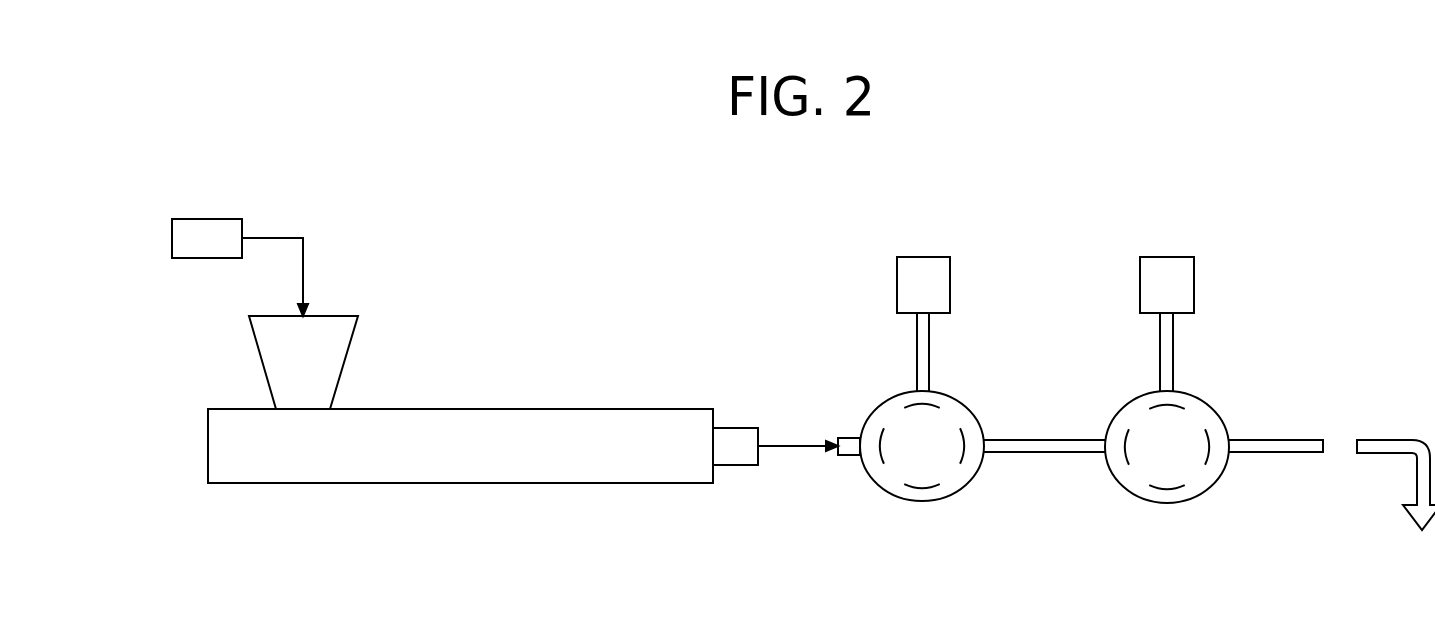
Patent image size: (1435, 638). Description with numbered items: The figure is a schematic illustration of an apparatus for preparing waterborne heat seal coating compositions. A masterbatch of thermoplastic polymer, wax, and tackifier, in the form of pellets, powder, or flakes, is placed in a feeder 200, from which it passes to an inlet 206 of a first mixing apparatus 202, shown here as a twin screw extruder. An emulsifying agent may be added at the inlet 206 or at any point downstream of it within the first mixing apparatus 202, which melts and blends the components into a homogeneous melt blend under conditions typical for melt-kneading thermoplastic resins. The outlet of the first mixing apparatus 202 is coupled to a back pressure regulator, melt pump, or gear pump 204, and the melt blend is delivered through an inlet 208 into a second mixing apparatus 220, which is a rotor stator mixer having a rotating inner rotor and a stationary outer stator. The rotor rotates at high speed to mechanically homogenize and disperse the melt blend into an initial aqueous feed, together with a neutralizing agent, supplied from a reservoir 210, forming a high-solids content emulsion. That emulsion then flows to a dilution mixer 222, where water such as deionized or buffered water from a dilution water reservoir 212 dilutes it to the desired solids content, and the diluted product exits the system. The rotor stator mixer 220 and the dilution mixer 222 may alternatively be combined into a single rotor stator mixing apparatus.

The feeder 200 is at (172, 236).
The first mixing apparatus 202 is at (480, 409).
The back pressure regulator, melt pump, or gear pump 204 is at (728, 428).
The inlet of the first mixing apparatus 206 is at (261, 356).
The inlet of the second mixing apparatus 208 is at (858, 438).
The reservoir 210 is at (911, 257).
The dilution water reservoir 212 is at (1155, 257).
The second mixing apparatus 220 is at (960, 492).
The dilution mixer 222 is at (1205, 492).